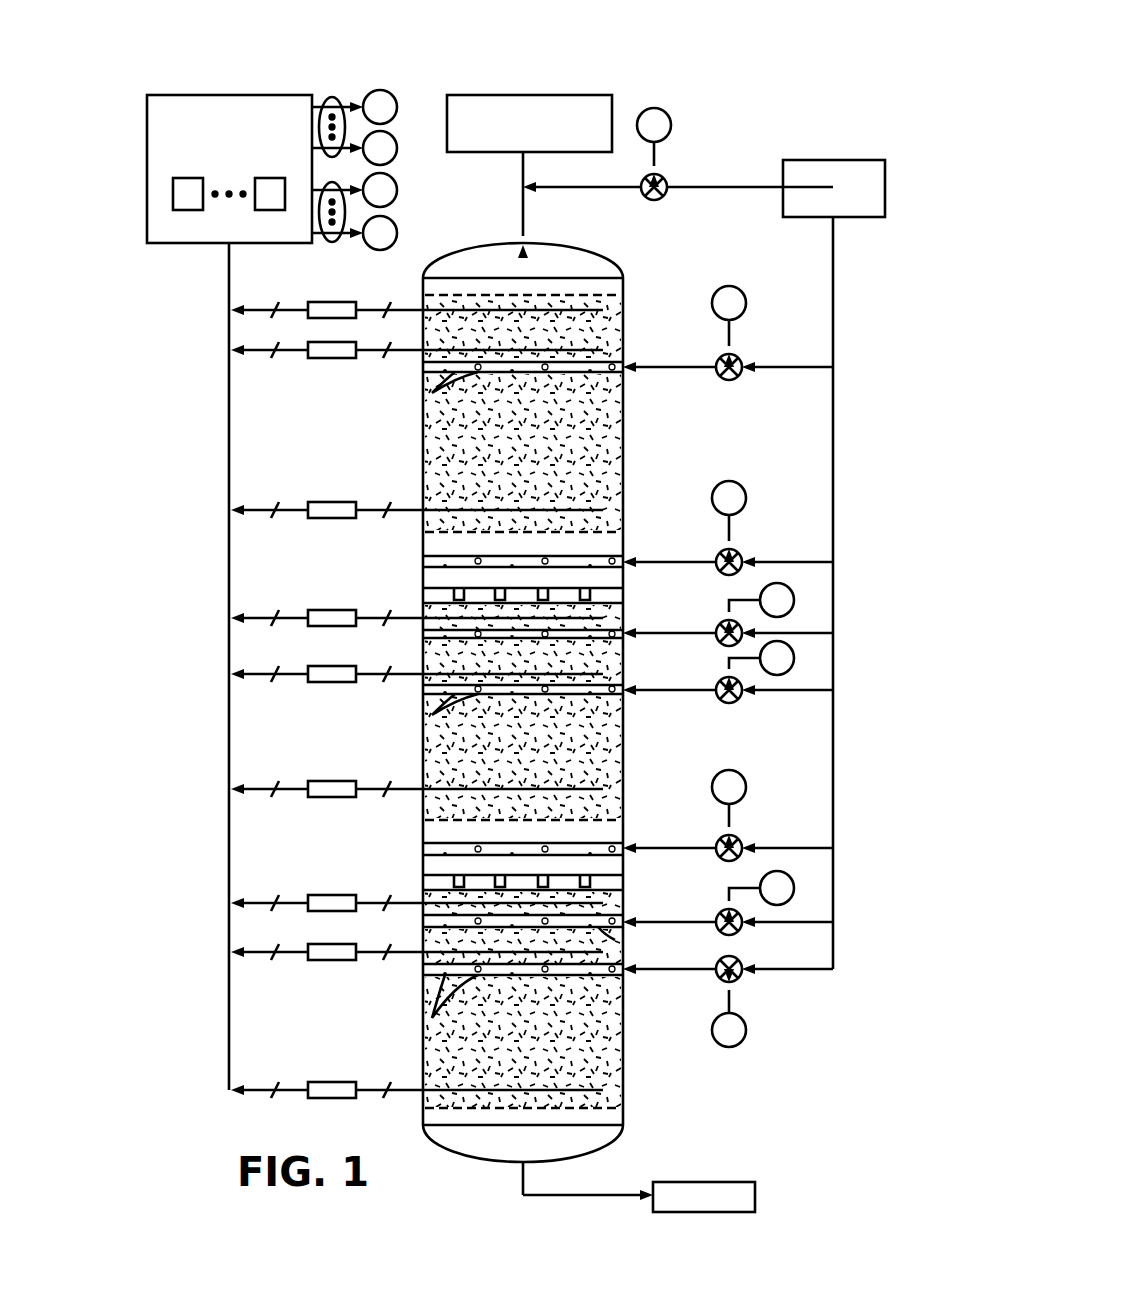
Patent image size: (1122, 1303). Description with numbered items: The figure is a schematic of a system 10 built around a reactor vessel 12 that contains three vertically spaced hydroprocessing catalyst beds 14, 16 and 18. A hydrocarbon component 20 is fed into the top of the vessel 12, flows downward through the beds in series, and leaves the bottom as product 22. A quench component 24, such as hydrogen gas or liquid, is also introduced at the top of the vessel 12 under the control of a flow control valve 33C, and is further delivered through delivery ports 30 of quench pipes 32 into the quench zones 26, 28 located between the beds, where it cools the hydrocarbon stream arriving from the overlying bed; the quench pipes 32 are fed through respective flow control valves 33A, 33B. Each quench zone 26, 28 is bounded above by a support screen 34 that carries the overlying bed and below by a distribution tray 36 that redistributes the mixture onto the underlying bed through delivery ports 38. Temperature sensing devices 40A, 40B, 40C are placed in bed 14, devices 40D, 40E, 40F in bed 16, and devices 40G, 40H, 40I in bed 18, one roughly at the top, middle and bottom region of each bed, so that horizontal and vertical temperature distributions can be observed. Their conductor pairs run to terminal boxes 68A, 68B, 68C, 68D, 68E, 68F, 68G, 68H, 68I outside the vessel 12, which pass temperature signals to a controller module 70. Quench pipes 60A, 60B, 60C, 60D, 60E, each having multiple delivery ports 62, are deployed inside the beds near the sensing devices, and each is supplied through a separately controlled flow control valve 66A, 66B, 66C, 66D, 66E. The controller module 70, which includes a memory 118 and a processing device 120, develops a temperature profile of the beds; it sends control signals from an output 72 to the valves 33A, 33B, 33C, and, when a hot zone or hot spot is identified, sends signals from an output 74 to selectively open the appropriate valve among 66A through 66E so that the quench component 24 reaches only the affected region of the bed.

The system 10 is at (733, 57).
The reactor vessel 12 is at (590, 245).
The catalyst bed 14 is at (570, 442).
The catalyst bed 16 is at (575, 752).
The catalyst bed 18 is at (570, 1050).
The hydrocarbon component 20 is at (470, 95).
The product 22 is at (712, 1182).
The quench component 24 is at (830, 160).
The quench zone 26 is at (432, 535).
The quench zone 28 is at (440, 845).
The delivery ports 30 is at (445, 573).
The quench pipes 32 is at (612, 556).
The flow control valve 33A is at (740, 553).
The flow control valve 33B is at (740, 839).
The flow control valve 33C is at (656, 200).
The support screen 34 is at (603, 532).
The distribution tray 36 is at (603, 588).
The delivery ports 38 is at (588, 592).
The temperature sensing device 40A is at (603, 310).
The temperature sensing device 40B is at (603, 350).
The temperature sensing device 40C is at (603, 510).
The temperature sensing device 40D is at (440, 615).
The temperature sensing device 40E is at (440, 672).
The temperature sensing device 40F is at (440, 786).
The temperature sensing device 40G is at (440, 900).
The temperature sensing device 40H is at (440, 955).
The temperature sensing device 40I is at (440, 1088).
The quench pipe 60A is at (605, 372).
The quench pipe 60B is at (605, 638).
The quench pipe 60C is at (605, 694).
The quench pipe 60D is at (440, 918).
The quench pipe 60E is at (605, 975).
The delivery ports 62 is at (430, 394).
The flow control valve 66A is at (732, 380).
The flow control valve 66B is at (717, 627).
The flow control valve 66C is at (731, 703).
The flow control valve 66D is at (737, 933).
The flow control valve 66E is at (730, 1047).
The terminal box 68A is at (345, 302).
The terminal box 68B is at (325, 358).
The terminal box 68C is at (330, 502).
The terminal box 68D is at (330, 610).
The terminal box 68E is at (330, 666).
The terminal box 68F is at (330, 781).
The terminal box 68G is at (330, 895).
The terminal box 68H is at (330, 944).
The terminal box 68I is at (330, 1082).
The controller module 70 is at (248, 95).
The output 72 is at (333, 242).
The output 74 is at (333, 97).
The memory 118 is at (275, 210).
The processing device 120 is at (185, 210).